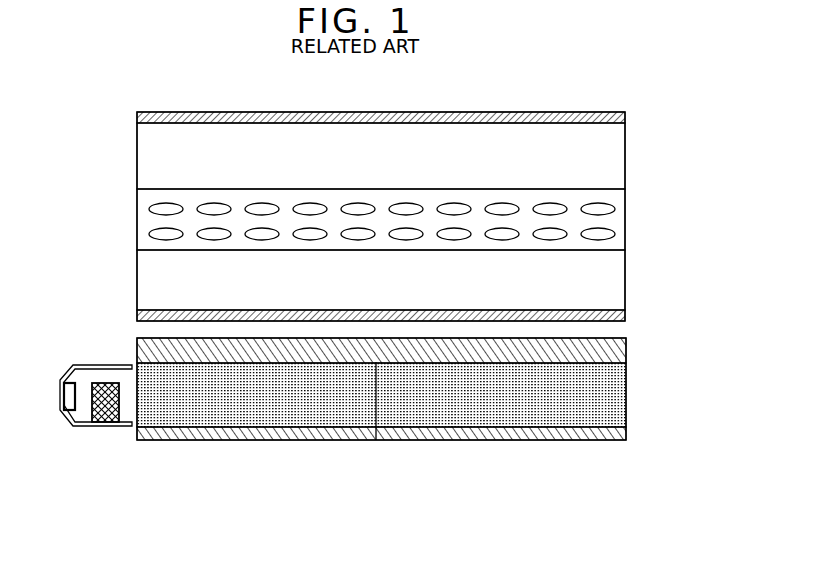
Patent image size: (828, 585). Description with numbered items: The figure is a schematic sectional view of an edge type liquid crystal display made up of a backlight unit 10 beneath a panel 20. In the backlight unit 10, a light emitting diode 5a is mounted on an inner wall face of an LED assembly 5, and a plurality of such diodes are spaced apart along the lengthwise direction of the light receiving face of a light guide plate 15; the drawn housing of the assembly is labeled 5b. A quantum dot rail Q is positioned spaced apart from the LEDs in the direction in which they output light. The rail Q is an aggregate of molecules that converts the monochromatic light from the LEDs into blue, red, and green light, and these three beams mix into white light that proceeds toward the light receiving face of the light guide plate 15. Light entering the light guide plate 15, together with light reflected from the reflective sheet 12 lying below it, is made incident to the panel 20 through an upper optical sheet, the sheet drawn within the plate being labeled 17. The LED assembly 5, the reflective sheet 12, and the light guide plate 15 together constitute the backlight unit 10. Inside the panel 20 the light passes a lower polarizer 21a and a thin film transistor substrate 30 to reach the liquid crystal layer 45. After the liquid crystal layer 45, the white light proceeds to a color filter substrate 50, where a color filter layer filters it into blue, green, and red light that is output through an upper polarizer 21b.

The panel 20 is at (698, 113).
The upper polarizer 21b is at (625, 120).
The color filter substrate 50 is at (622, 155).
The liquid crystal layer 45 is at (622, 225).
The thin film transistor substrate 30 is at (622, 280).
The lower polarizer 21a is at (625, 318).
The backlight unit 10 is at (393, 532).
The light guide plate 15 is at (309, 415).
The reflective sheet 12 is at (247, 436).
The optical sheet 17 is at (376, 440).
The LED assembly 5 is at (85, 448).
The light emitting diode 5a is at (69, 405).
The lamp housing 5b is at (90, 427).
The quantum dot rail Q is at (110, 439).